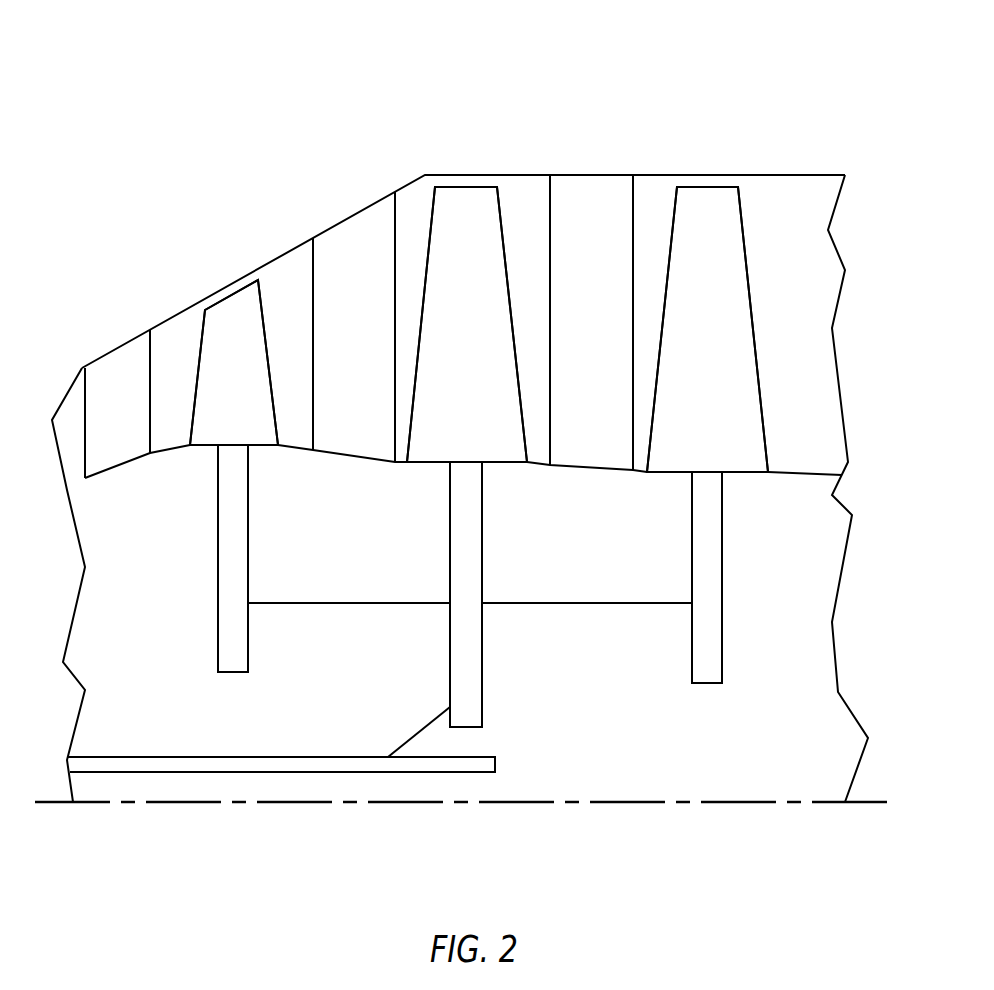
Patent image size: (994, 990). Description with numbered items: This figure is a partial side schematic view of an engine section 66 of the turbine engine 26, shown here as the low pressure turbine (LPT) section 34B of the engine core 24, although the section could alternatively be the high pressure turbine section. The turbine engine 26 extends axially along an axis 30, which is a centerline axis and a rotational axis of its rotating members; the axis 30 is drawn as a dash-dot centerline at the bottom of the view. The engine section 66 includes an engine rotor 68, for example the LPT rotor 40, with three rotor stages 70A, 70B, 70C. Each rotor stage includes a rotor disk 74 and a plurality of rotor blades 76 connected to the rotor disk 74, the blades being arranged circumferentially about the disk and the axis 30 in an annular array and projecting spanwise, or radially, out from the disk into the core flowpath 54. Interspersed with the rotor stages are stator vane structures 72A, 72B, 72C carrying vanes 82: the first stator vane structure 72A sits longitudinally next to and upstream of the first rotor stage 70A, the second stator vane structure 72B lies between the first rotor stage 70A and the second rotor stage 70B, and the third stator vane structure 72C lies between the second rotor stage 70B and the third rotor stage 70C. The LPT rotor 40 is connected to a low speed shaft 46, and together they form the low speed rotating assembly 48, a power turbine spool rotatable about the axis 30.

The engine core 24 is at (117, 406).
The turbine engine 26 is at (173, 80).
The low pressure turbine section 34B is at (463, 193).
The engine section 66 is at (496, 96).
The core flowpath 54 is at (829, 275).
The first stator vane structure 72A is at (103, 337).
The second stator vane structure 72B is at (344, 204).
The third stator vane structure 72C is at (594, 160).
The vanes 82 is at (444, 280).
The rotor blades 76 is at (252, 398).
The rotor disk 74 is at (250, 648).
The first rotor stage 70A is at (195, 472).
The second rotor stage 70B is at (425, 486).
The third rotor stage 70C is at (666, 496).
The LPT rotor 40 is at (581, 638).
The engine rotor 68 is at (767, 643).
The low speed rotating assembly 48 is at (524, 737).
The low speed shaft 46 is at (178, 772).
The axis 30 is at (53, 802).